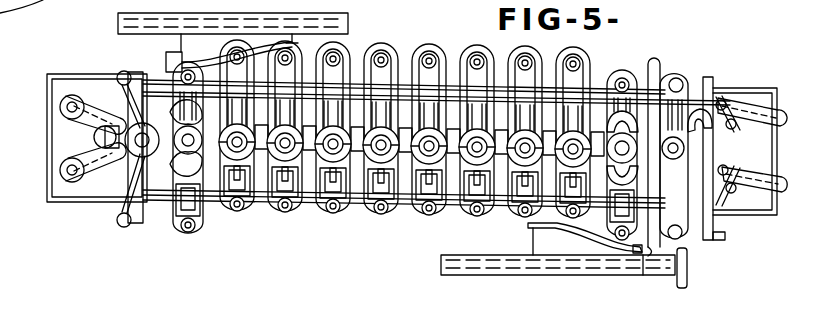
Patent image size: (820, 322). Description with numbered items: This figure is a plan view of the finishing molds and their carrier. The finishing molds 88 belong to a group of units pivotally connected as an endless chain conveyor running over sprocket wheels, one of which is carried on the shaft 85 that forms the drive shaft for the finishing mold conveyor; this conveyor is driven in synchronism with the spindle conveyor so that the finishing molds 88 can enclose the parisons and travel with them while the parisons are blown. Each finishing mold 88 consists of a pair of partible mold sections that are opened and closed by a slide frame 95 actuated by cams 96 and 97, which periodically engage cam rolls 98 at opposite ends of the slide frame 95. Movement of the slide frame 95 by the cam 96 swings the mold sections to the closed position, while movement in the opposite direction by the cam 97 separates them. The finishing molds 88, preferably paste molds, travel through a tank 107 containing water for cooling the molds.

The shaft 85 is at (662, 67).
The finishing mold 88 is at (81, 162).
The slide frame 95 is at (462, 68).
The cam 96 is at (530, 229).
The cam 97 is at (180, 53).
The cam rolls 98 is at (424, 66).
The tank 107 is at (96, 205).